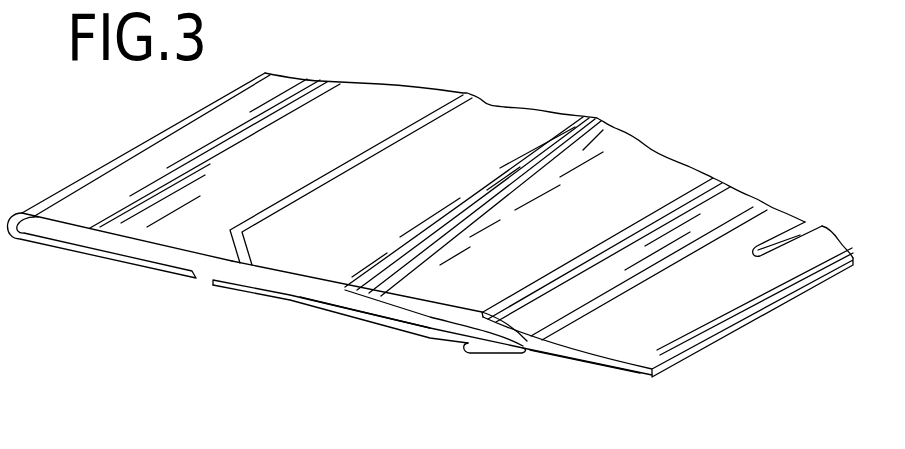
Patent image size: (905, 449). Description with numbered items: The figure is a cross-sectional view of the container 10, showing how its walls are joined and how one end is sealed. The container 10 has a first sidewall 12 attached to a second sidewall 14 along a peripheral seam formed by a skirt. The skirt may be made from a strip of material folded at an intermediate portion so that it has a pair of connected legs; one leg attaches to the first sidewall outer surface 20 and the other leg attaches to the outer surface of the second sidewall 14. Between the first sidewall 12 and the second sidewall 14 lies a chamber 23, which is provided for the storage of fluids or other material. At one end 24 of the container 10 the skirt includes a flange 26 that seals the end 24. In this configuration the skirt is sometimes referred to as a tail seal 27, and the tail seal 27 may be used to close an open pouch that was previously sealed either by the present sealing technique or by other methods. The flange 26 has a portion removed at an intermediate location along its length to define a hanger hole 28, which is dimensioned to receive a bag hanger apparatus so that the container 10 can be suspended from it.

The container 10 is at (149, 121).
The first sidewall 12 is at (345, 289).
The second sidewall 14 is at (308, 304).
The first sidewall outer surface 20 is at (418, 203).
The chamber 23 is at (380, 306).
The end 24 is at (507, 354).
The flange 26 is at (655, 340).
The tail seal 27 is at (564, 369).
The hanger hole 28 is at (783, 240).